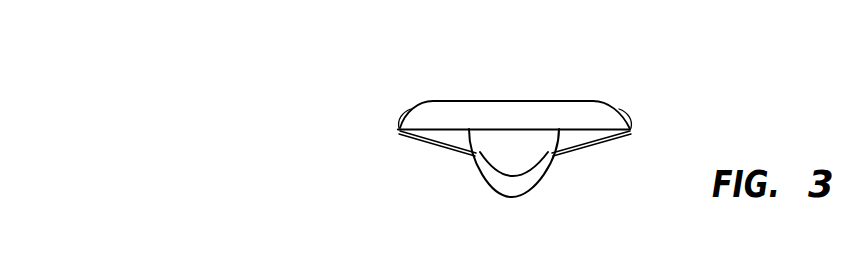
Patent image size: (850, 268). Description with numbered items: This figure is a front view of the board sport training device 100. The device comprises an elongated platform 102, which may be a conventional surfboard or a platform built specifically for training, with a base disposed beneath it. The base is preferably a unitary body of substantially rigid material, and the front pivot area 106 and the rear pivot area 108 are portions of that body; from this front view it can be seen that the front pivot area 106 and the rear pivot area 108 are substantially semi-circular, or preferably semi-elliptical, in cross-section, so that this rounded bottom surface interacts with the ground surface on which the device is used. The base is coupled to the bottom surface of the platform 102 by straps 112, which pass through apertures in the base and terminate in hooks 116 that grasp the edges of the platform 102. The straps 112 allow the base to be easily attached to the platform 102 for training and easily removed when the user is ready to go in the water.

The board sport training device 100 is at (440, 85).
The elongated platform 102 is at (561, 100).
The front pivot area 106 is at (540, 180).
The rear pivot area 108 is at (481, 178).
The straps 112 is at (413, 140).
The hooks 116 is at (402, 113).